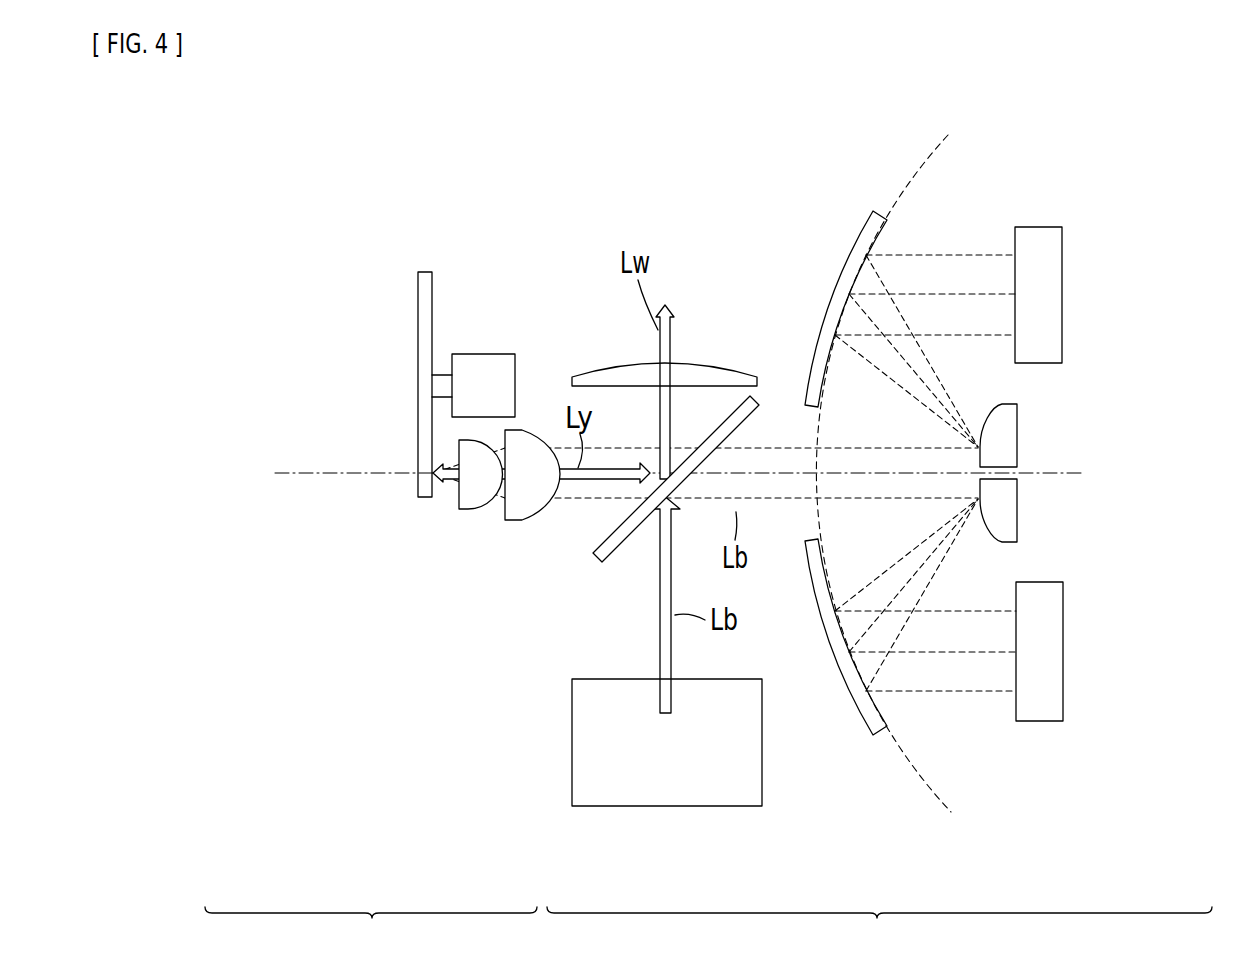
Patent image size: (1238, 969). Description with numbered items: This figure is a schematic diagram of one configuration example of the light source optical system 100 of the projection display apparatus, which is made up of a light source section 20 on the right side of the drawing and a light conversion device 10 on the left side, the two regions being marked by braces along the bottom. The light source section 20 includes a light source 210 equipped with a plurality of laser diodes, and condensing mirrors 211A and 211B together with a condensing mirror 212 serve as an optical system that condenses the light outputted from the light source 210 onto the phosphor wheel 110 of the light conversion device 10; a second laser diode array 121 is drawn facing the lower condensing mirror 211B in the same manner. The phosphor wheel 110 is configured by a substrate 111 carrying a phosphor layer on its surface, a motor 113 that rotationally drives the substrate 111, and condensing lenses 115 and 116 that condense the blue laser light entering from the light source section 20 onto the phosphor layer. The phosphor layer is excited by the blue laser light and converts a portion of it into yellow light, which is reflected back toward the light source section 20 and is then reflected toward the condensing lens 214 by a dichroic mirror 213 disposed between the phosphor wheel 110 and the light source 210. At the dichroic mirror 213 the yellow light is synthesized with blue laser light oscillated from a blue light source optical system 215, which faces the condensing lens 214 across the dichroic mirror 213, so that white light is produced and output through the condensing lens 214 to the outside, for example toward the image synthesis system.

The light source optical system 100 is at (1097, 151).
The phosphor wheel 110 is at (386, 230).
The substrate 111 is at (424, 272).
The motor 113 is at (483, 353).
The condensing lens 115 is at (466, 509).
The condensing lens 116 is at (517, 520).
The dichroic mirror 213 is at (597, 560).
The condensing lens 214 is at (730, 376).
The blue light source optical system 215 is at (665, 806).
The condensing mirror 211A is at (858, 237).
The condensing mirror 211B is at (866, 712).
The light source 210 is at (1052, 297).
The condensing mirror 212 is at (1010, 436).
The light source 121 is at (1063, 650).
The light conversion device 10 is at (371, 930).
The light source section 20 is at (879, 930).